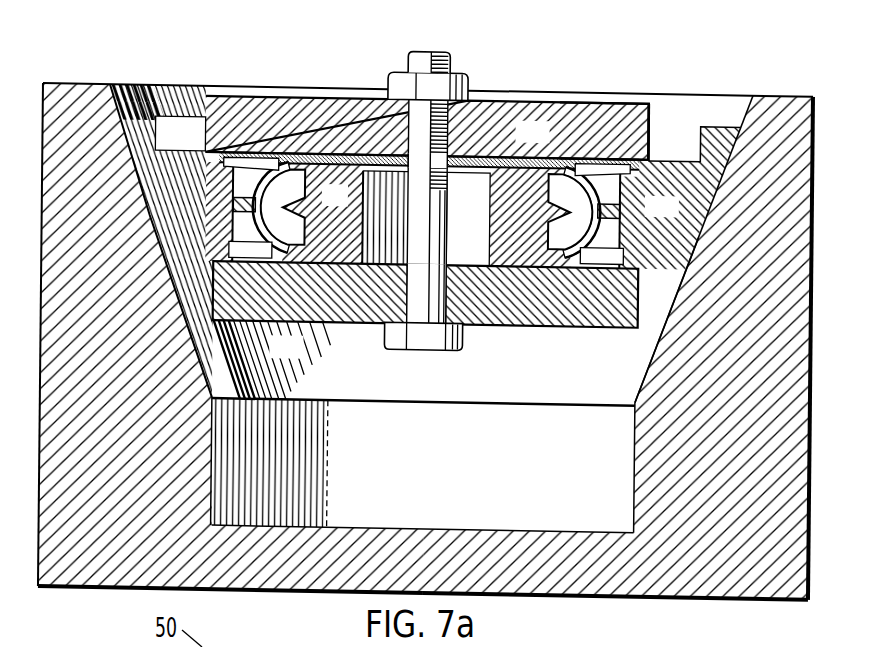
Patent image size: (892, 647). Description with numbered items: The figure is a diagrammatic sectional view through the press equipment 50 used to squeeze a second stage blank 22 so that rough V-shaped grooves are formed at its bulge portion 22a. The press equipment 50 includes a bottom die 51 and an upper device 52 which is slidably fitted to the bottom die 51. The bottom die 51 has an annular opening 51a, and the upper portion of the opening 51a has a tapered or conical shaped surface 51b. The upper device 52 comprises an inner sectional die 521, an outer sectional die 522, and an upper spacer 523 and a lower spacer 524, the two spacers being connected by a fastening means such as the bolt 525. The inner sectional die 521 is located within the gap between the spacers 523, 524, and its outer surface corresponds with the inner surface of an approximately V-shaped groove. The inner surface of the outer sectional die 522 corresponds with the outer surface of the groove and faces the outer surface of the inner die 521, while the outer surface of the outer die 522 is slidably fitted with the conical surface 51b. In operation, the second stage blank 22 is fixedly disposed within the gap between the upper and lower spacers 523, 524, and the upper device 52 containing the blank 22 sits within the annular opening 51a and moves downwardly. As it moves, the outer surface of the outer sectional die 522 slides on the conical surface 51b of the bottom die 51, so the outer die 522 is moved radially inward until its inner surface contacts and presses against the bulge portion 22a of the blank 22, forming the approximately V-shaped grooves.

The press equipment 50 is at (143, 76).
The bottom die 51 is at (771, 82).
The annular opening 51a is at (637, 436).
The conical shaped surface 51b is at (656, 344).
The upper device 52 is at (303, 86).
The inner sectional die 521 is at (518, 166).
The outer sectional die 522 is at (681, 127).
The upper spacer 523 is at (612, 97).
The lower spacer 524 is at (327, 307).
The bolt 525 is at (425, 333).
The second stage blank 22 is at (298, 208).
The bulge portion 22a is at (606, 178).